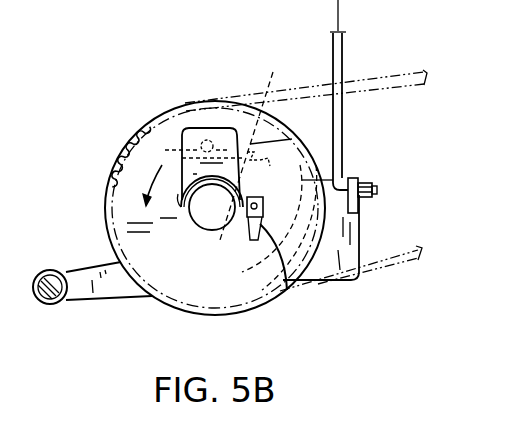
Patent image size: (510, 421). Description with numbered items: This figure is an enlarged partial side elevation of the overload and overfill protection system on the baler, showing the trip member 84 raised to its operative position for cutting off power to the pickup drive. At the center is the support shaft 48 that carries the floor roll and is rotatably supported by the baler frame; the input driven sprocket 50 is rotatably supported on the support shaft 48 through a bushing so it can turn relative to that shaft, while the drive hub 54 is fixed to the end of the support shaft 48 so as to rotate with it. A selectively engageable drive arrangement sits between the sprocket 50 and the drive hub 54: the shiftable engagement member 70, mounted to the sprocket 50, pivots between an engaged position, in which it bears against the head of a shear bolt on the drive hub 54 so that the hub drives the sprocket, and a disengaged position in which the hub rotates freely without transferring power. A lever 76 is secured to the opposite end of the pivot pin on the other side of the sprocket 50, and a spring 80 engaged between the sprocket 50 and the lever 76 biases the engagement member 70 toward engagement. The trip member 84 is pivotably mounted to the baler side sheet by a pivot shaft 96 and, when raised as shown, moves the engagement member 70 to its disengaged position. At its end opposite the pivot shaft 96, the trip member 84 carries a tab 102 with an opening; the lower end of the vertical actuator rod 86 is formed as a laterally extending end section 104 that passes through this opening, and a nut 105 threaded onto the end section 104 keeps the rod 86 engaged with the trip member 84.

The support shaft 48 is at (212, 200).
The input driven sprocket 50 is at (186, 117).
The drive hub 54 is at (205, 127).
The shiftable engagement member 70 is at (287, 290).
The lever 76 is at (255, 127).
The spring 80 is at (251, 144).
The trip member 84 is at (142, 314).
The vertical actuator rod 86 is at (344, 57).
The pivot shaft 96 is at (50, 278).
The tab 102 is at (350, 179).
The end section 104 is at (368, 186).
The nut 105 is at (364, 182).